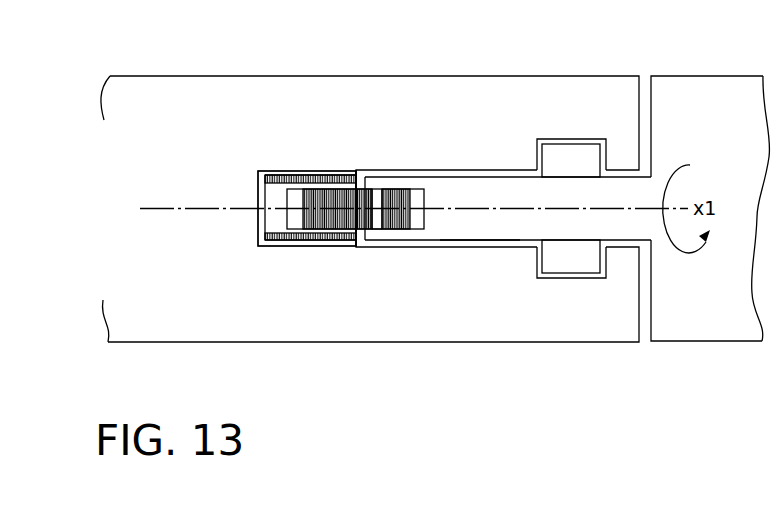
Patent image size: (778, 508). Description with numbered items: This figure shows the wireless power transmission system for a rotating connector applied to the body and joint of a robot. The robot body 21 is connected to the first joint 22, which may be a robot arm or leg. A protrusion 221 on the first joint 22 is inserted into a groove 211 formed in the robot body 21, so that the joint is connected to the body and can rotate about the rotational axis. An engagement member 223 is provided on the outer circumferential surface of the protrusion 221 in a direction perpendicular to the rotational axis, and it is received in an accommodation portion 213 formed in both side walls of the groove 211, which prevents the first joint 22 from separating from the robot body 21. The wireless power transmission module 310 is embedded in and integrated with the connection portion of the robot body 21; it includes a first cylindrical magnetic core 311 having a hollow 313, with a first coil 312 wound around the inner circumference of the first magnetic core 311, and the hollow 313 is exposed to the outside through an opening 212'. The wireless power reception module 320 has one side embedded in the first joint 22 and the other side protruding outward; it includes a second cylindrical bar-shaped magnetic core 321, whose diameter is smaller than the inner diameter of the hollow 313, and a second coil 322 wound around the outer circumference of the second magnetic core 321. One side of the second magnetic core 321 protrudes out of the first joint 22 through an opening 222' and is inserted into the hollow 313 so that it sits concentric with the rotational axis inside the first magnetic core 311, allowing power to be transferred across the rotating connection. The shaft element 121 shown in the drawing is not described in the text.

The robot body 21 is at (323, 90).
The first joint 22 is at (716, 90).
The shaft 121 is at (502, 193).
The groove 211 is at (462, 233).
The protrusion 221 is at (500, 240).
The accommodation portion 213 is at (555, 139).
The engagement member 223 is at (578, 158).
The wireless power transmission module 310 is at (254, 220).
The first cylindrical magnetic core 311 is at (258, 197).
The first coil 312 is at (265, 177).
The hollow 313 is at (274, 226).
The opening 212' is at (312, 270).
The wireless power reception module 320 is at (401, 178).
The second cylindrical bar-shaped magnetic core 321 is at (418, 193).
The second coil 322 is at (376, 186).
The opening 222' is at (403, 267).